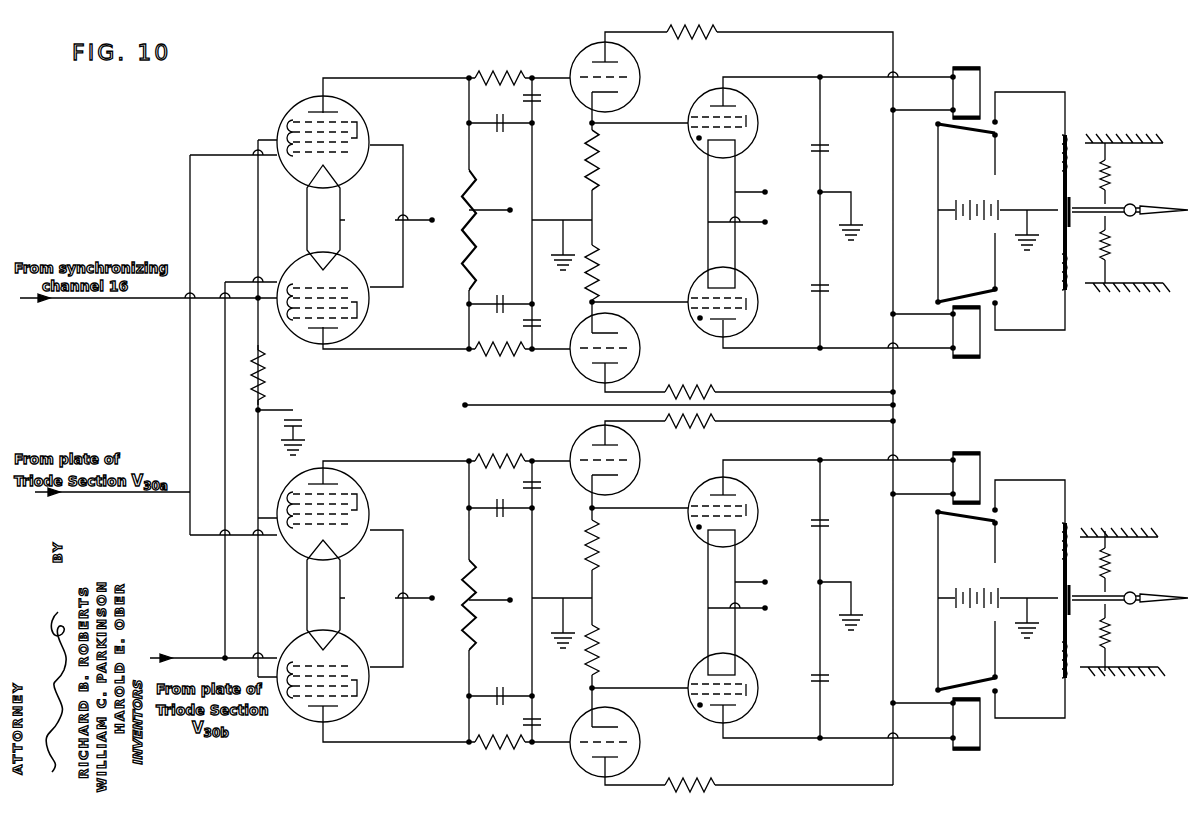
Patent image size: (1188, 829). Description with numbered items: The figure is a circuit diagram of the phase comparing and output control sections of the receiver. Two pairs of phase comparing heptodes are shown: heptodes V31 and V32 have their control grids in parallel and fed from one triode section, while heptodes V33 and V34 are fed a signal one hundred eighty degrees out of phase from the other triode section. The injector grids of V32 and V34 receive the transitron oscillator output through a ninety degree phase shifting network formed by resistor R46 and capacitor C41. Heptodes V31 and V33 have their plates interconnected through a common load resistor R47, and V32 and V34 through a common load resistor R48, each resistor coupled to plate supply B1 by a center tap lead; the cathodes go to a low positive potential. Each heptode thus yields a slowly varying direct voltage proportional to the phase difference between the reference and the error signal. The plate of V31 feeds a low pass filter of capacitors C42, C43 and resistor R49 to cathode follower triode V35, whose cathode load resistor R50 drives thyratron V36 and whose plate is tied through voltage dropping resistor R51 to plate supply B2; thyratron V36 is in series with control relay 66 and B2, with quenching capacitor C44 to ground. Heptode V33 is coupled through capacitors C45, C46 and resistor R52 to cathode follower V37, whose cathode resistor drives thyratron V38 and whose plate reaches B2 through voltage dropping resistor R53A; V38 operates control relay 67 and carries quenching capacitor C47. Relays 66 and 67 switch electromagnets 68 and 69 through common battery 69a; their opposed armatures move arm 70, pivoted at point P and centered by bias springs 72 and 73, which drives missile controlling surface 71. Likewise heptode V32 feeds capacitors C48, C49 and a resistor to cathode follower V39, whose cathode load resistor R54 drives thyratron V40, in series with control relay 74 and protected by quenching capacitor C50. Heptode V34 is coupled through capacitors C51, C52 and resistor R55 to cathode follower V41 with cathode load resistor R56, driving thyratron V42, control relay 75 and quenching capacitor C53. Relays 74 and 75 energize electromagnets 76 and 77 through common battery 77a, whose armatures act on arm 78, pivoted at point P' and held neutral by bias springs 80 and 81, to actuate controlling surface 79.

The phase comparing heptode V32 is at (330, 183).
The phase comparing heptode V34 is at (336, 298).
The phase comparing heptode V31 is at (331, 559).
The phase comparing heptode V33 is at (336, 676).
The cathode follower triode V39 is at (616, 77).
The cathode follower triode V41 is at (616, 348).
The cathode follower triode V35 is at (616, 460).
The cathode follower triode V37 is at (616, 742).
The thyratron V40 is at (731, 188).
The thyratron V42 is at (733, 302).
The thyratron V36 is at (733, 576).
The thyratron V38 is at (733, 688).
The resistor R55 is at (503, 361).
The resistor R49 is at (500, 472).
The resistor R52 is at (503, 754).
The common load resistor R48 is at (482, 230).
The common load resistor R47 is at (482, 610).
The resistor R46 is at (272, 375).
The load resistor R54 is at (605, 160).
The load resistor R56 is at (605, 272).
The cathode load resistor R50 is at (605, 545).
The voltage dropping resistor R51 is at (691, 236).
The voltage dropping resistor R53A is at (694, 774).
The capacitor C49 is at (543, 109).
The capacitor C48 is at (499, 135).
The capacitor C51 is at (497, 312).
The capacitor C52 is at (544, 319).
The capacitor C43 is at (544, 495).
The capacitor C42 is at (501, 520).
The capacitor C45 is at (495, 706).
The capacitor C46 is at (544, 711).
The capacitor C41 is at (304, 432).
The quenching capacitor C50 is at (832, 161).
The quenching capacitor C53 is at (831, 300).
The quenching capacitor C44 is at (831, 535).
The quenching capacitor C47 is at (833, 690).
The source of plate potential B1 is at (509, 419).
The source of plate potential B2 is at (471, 419).
The control relay 74 is at (982, 83).
The control relay 75 is at (982, 333).
The electromagnet 76 is at (1062, 163).
The electromagnet 77 is at (1055, 282).
The common battery 77a is at (985, 200).
The arm 78 is at (1088, 216).
The controlling surface 79 is at (1160, 212).
The bias spring 80 is at (1113, 178).
The bias spring 81 is at (1112, 244).
The pivot point P' is at (1129, 224).
The control relay 66 is at (982, 470).
The control relay 67 is at (982, 725).
The electromagnet 68 is at (1046, 591).
The electromagnet 69 is at (1047, 669).
The common battery 69a is at (977, 612).
The arm 70 is at (1105, 589).
The missile controlling surface 71 is at (1164, 613).
The bias spring 72 is at (1127, 561).
The bias spring 73 is at (1126, 637).
The pivot point P is at (1143, 588).